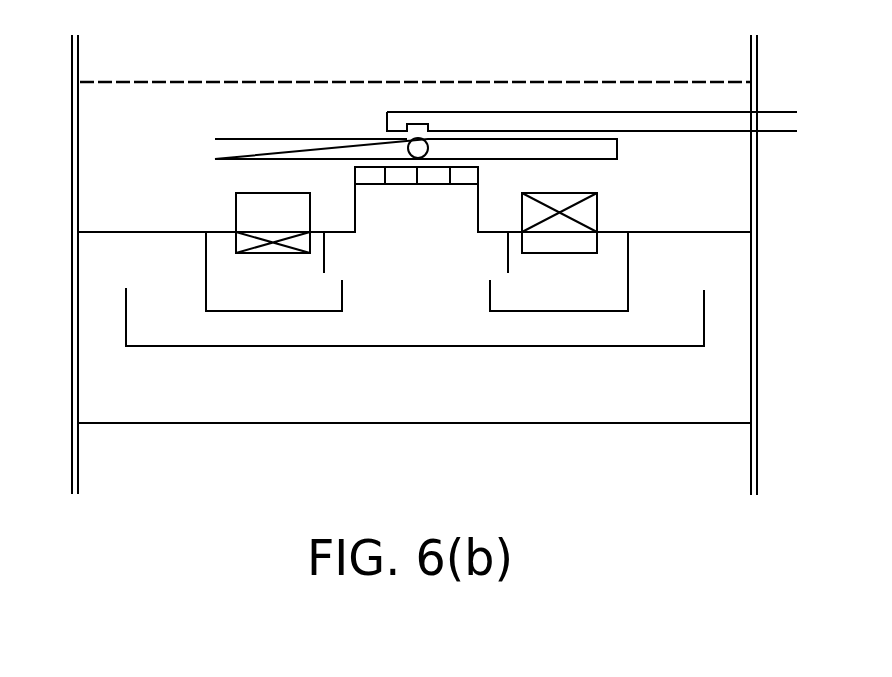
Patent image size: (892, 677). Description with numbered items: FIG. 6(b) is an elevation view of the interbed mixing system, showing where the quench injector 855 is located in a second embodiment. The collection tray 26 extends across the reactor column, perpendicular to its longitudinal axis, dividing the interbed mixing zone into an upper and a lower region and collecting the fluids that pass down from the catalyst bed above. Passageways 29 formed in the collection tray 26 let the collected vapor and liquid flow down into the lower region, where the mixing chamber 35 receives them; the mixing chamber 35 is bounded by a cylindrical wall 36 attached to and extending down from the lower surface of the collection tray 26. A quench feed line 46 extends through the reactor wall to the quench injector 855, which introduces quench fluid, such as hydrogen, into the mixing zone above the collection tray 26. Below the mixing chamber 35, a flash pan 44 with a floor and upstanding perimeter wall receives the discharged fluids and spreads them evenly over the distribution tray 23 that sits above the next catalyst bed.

The quench feed line 46 is at (773, 110).
The quench injector 855 is at (609, 160).
The passageway 29 is at (570, 192).
The collection tray 26 is at (157, 234).
The cylindrical wall 36 is at (205, 279).
The mixing chamber 35 is at (273, 251).
The flash pan 44 is at (627, 348).
The distribution tray 23 is at (637, 424).